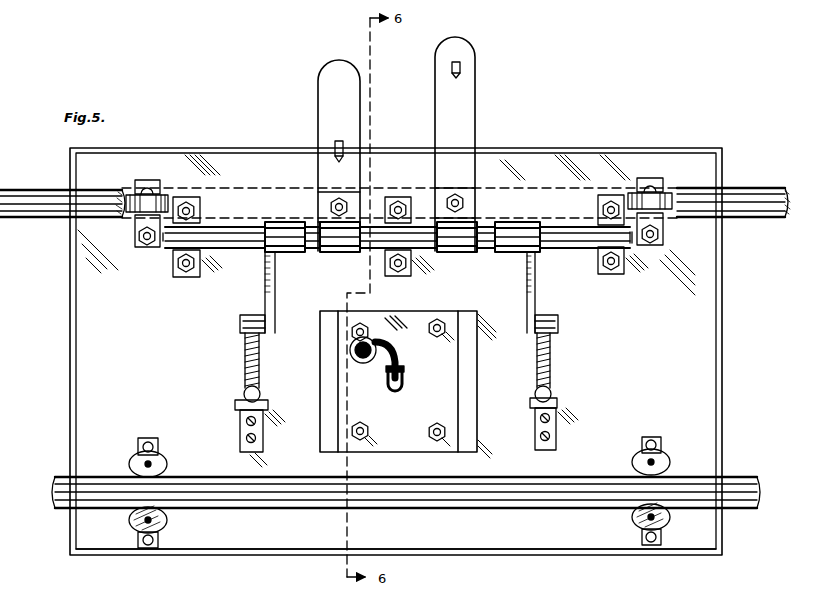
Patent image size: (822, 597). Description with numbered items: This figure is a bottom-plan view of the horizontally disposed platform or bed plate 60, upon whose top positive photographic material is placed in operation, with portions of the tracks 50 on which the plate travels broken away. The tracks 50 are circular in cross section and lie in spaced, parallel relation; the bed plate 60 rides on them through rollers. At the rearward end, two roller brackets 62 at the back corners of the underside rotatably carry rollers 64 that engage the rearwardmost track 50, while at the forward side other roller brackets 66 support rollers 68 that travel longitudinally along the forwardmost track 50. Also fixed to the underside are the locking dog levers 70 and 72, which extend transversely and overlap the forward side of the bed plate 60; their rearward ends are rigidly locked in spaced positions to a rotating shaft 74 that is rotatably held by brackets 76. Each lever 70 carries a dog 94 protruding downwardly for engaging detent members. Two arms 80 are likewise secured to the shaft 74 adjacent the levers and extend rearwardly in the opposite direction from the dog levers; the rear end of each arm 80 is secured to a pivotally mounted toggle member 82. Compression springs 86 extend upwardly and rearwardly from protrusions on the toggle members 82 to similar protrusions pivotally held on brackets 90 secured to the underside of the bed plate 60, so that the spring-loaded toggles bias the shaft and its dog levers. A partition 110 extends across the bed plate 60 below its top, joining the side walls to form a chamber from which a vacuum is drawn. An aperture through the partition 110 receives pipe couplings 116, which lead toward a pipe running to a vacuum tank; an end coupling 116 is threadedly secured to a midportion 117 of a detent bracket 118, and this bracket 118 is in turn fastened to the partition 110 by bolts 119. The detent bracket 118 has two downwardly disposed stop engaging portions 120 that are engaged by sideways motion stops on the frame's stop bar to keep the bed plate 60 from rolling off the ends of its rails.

The tracks 50 is at (60, 218).
The bed plate 60 is at (637, 146).
The roller brackets 62 is at (158, 440).
The rollers 64 is at (156, 512).
The roller brackets 66 is at (143, 250).
The rollers 68 is at (160, 196).
The locking dog lever 70 is at (470, 108).
The locking dog lever 72 is at (325, 109).
The rotating shaft 74 is at (248, 249).
The bracket 76 is at (186, 278).
The arms 80 is at (275, 296).
The toggle member 82 is at (242, 336).
The compression springs 86 is at (245, 370).
The brackets 90 is at (262, 445).
The dog 94 is at (334, 150).
The partition 110 is at (493, 548).
The pipe couplings 116 is at (388, 376).
The midportion 117 is at (386, 318).
The detent bracket 118 is at (450, 392).
The bolts 119 is at (443, 322).
The stop engaging portions 120 is at (330, 450).